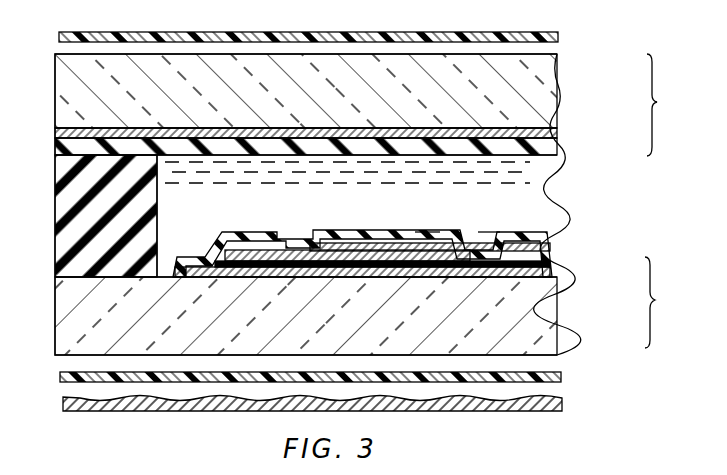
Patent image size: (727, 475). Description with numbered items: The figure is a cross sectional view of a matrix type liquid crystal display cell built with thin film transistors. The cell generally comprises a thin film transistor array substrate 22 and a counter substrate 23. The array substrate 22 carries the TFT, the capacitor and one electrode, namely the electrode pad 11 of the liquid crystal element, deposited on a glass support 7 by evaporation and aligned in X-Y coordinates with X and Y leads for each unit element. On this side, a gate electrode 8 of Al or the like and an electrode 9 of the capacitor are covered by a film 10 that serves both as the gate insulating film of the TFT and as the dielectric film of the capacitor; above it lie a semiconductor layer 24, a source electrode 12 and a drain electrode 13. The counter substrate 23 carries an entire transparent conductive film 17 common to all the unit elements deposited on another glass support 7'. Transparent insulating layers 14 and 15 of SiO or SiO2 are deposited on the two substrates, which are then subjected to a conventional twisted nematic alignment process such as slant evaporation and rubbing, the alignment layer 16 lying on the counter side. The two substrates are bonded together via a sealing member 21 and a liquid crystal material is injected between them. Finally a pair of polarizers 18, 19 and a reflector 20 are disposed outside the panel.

The glass support 7 is at (339, 316).
The glass support 7' is at (344, 88).
The gate electrode 8 is at (530, 290).
The electrode of the capacitor 9 is at (425, 232).
The gate insulating film 10 is at (560, 270).
The electrode pad 11 is at (552, 262).
The source electrode 12 is at (540, 212).
The drain electrode 13 is at (538, 234).
The transparent insulating layer 14 is at (552, 246).
The transparent insulating layer 15 is at (552, 146).
The alignment layer 16 is at (548, 168).
The transparent conductive film 17 is at (553, 132).
The polarizer 18 is at (562, 377).
The polarizer 19 is at (560, 38).
The reflector 20 is at (562, 402).
The sealing member 21 is at (66, 252).
The thin film transistor array substrate 22 is at (662, 302).
The counter substrate 23 is at (664, 105).
The semiconductor layer 24 is at (490, 232).